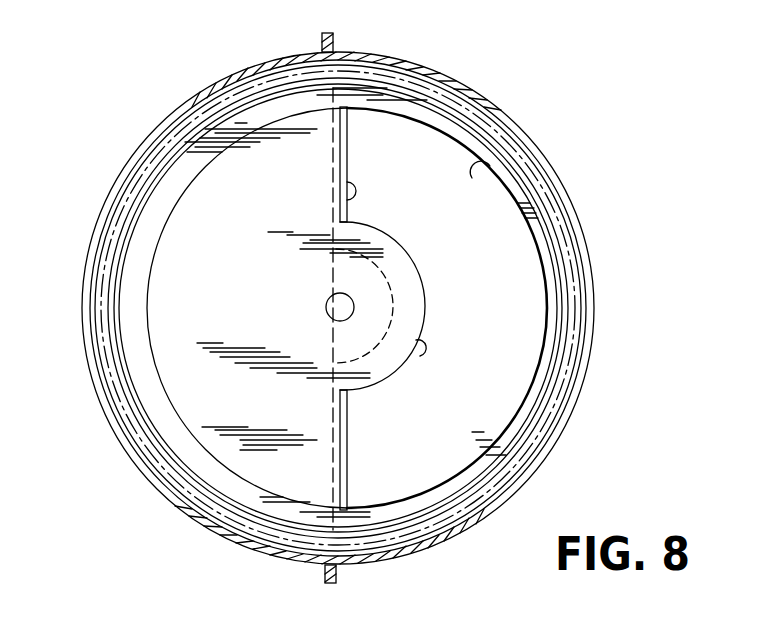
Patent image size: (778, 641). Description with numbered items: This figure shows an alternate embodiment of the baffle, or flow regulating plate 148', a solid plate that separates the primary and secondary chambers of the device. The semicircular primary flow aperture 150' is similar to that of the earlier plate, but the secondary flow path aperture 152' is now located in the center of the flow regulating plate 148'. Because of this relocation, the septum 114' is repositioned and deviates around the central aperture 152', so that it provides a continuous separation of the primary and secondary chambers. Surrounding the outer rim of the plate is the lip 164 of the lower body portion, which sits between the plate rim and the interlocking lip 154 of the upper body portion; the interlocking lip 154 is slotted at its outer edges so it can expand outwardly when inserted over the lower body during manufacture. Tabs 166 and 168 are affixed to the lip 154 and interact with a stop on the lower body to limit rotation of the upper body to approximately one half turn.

The septum 114' is at (406, 308).
The flow regulating plate 148' is at (376, 308).
The primary flow aperture 150' is at (436, 238).
The secondary flow path aperture 152' is at (311, 294).
The interlocking lip 154 is at (236, 70).
The lip 164 is at (527, 447).
The tab 166 is at (324, 40).
The tab 168 is at (327, 573).